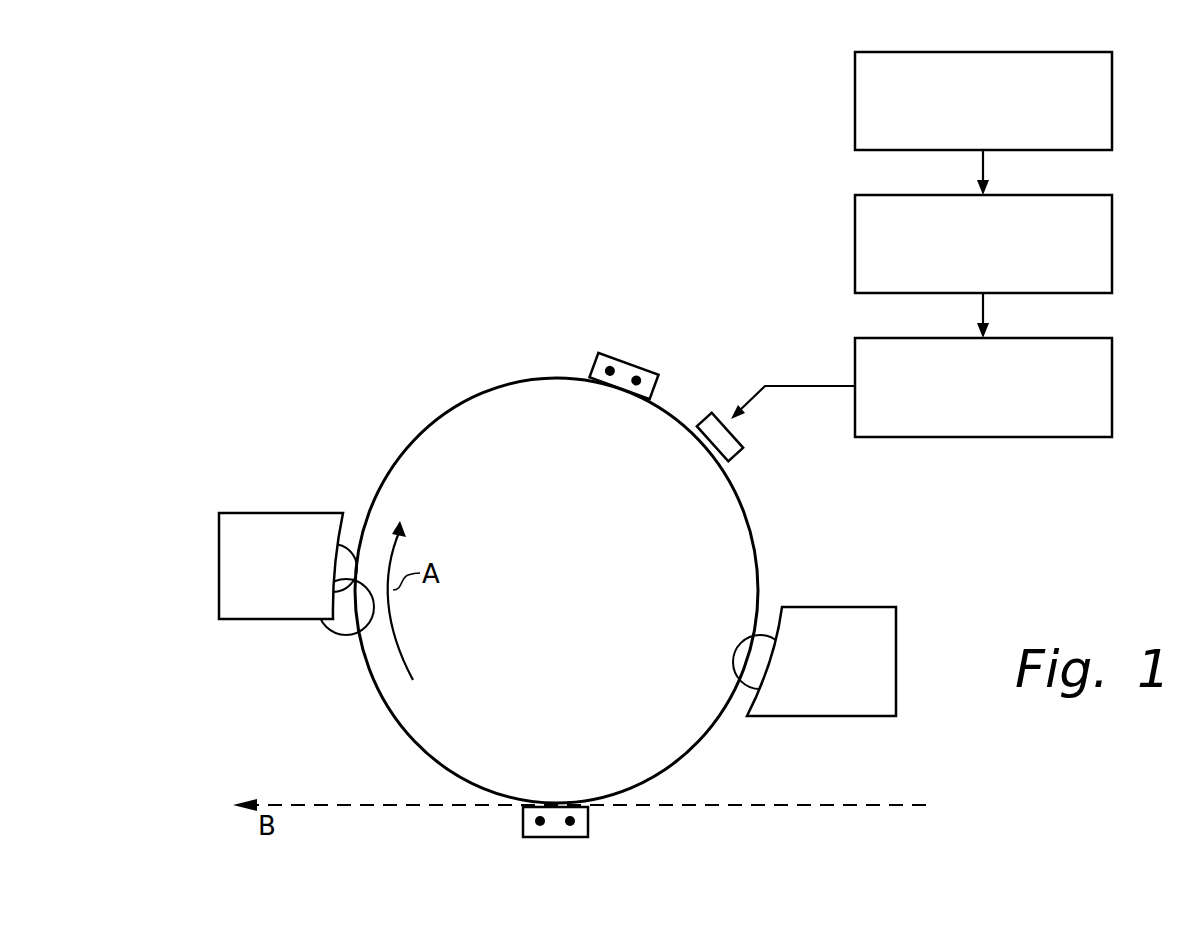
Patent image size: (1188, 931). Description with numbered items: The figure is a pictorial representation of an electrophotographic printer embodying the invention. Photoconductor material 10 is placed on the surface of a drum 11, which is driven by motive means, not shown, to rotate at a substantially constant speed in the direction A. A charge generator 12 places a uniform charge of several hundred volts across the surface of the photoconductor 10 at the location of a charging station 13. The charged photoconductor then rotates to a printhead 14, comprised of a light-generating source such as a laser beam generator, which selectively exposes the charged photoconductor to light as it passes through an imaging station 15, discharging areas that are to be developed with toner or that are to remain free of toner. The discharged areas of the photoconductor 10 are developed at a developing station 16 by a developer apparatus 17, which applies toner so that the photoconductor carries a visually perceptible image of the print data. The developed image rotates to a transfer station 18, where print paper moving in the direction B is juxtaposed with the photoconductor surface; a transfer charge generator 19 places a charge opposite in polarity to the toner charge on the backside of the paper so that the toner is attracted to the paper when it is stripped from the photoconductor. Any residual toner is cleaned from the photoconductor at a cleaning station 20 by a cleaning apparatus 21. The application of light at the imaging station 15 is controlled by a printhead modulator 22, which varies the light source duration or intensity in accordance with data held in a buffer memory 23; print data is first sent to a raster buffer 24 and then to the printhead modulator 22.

The photoconductor material 10 is at (437, 413).
The drum 11 is at (573, 607).
The charge generator 12 is at (628, 354).
The charging station 13 is at (615, 395).
The printhead 14 is at (740, 456).
The imaging station 15 is at (700, 448).
The developing station 16 is at (752, 655).
The developer apparatus 17 is at (840, 692).
The transfer station 18 is at (552, 807).
The transfer charge generator 19 is at (566, 837).
The cleaning station 20 is at (358, 644).
The cleaning apparatus 21 is at (252, 513).
The printhead modulator 22 is at (1112, 355).
The buffer memory 23 is at (1112, 70).
The raster buffer 24 is at (1112, 213).